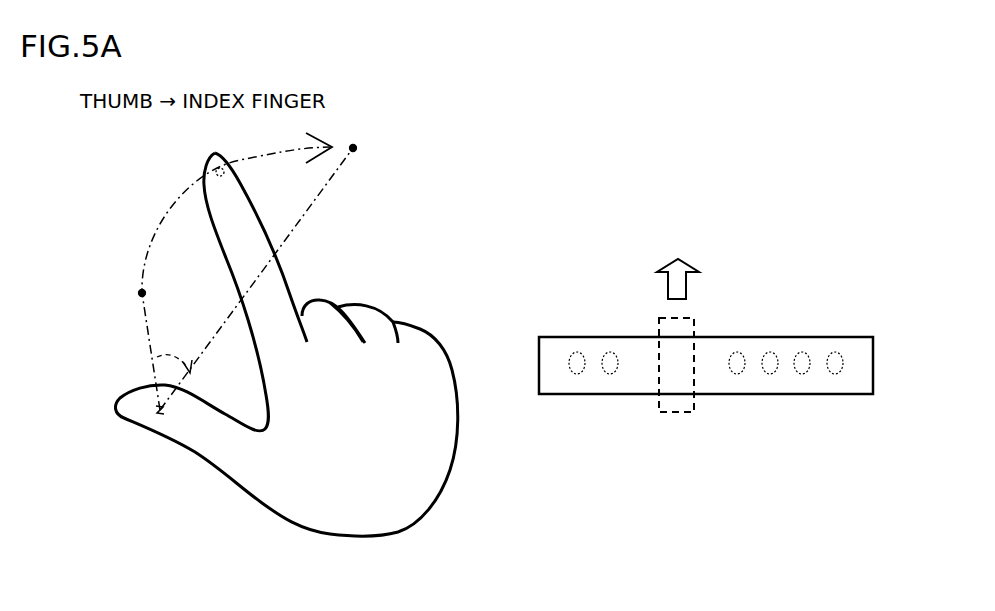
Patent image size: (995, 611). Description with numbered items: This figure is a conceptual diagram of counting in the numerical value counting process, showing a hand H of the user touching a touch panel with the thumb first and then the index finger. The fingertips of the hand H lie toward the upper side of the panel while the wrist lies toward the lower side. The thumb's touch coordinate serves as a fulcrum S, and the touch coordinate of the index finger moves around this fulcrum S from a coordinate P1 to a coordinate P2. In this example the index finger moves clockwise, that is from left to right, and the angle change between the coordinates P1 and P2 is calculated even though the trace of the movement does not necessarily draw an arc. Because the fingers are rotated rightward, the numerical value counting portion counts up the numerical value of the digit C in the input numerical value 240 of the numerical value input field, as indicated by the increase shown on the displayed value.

The hand H is at (424, 341).
The coordinate P1 is at (142, 293).
The coordinate P2 is at (358, 145).
The fulcrum S is at (158, 412).
The input numerical value 240 is at (772, 337).
The digit C is at (683, 318).